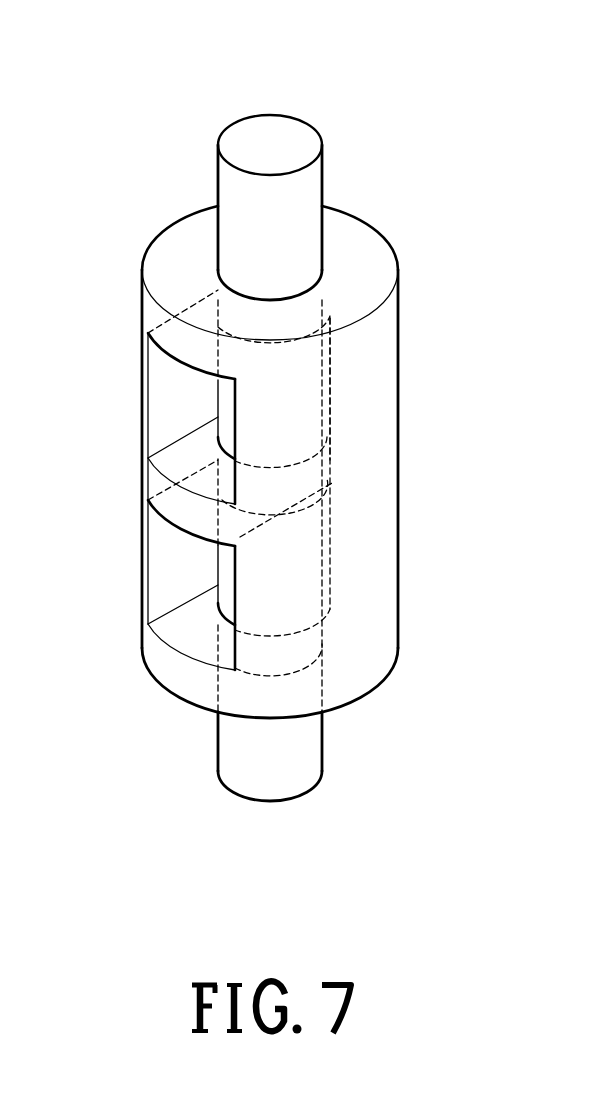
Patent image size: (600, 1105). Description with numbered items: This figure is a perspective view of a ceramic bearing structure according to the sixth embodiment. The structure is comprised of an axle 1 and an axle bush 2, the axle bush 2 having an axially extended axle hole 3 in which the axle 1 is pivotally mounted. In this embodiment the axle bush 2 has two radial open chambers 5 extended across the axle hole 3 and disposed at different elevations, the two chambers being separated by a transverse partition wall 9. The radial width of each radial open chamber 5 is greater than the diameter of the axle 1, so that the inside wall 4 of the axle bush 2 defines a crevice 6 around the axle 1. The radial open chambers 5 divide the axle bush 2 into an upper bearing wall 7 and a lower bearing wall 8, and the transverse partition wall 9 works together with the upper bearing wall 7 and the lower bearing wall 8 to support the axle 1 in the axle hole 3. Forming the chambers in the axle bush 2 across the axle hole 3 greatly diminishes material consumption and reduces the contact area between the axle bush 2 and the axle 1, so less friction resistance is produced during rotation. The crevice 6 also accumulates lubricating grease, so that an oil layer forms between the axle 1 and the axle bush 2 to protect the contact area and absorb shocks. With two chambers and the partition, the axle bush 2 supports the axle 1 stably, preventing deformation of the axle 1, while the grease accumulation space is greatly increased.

The axle 1 is at (305, 197).
The axle bush 2 is at (382, 543).
The axle hole 3 is at (213, 267).
The inside wall 4 is at (235, 380).
The radial open chamber 5 is at (188, 457).
The crevice 6 is at (330, 375).
The upper bearing wall 7 is at (207, 297).
The lower bearing wall 8 is at (327, 615).
The transverse partition wall 9 is at (148, 500).